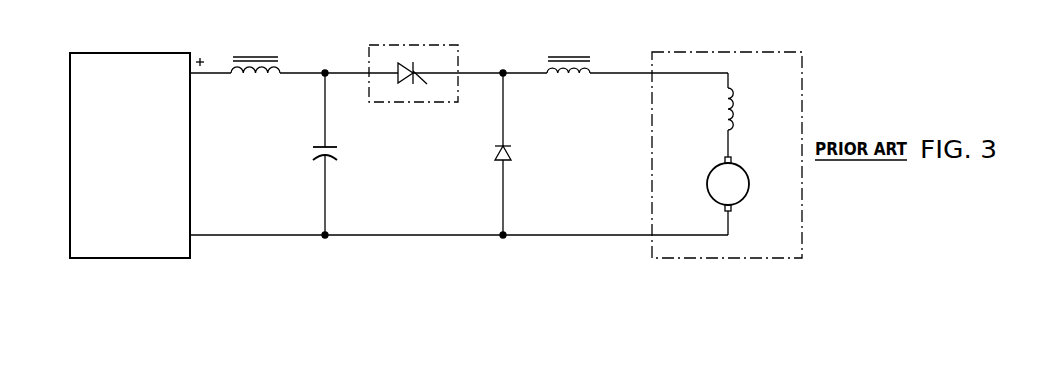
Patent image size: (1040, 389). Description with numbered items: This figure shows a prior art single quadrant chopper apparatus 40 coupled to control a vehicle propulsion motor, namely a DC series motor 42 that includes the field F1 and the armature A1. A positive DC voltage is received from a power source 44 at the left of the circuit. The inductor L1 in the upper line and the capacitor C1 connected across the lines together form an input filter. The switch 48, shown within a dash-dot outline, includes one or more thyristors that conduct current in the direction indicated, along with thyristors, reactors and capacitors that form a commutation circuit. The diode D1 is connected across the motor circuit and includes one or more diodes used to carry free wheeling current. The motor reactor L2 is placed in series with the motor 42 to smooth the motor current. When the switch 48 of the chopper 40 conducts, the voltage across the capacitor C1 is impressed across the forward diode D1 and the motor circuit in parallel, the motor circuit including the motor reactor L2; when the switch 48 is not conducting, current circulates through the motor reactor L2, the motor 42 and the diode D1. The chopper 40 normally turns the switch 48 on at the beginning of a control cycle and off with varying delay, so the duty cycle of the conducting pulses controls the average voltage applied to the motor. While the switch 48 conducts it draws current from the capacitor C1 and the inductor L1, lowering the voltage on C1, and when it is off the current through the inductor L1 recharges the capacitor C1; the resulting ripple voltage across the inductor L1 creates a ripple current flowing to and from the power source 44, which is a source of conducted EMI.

The single quadrant chopper apparatus 40 is at (429, 158).
The power source 44 is at (70, 62).
The switch 48 is at (372, 104).
The DC series motor 42 is at (652, 173).
The inductor L1 is at (262, 74).
The capacitor C1 is at (312, 151).
The diode D1 is at (514, 153).
The motor reactor L2 is at (554, 80).
The field F1 is at (722, 97).
The armature A1 is at (707, 182).